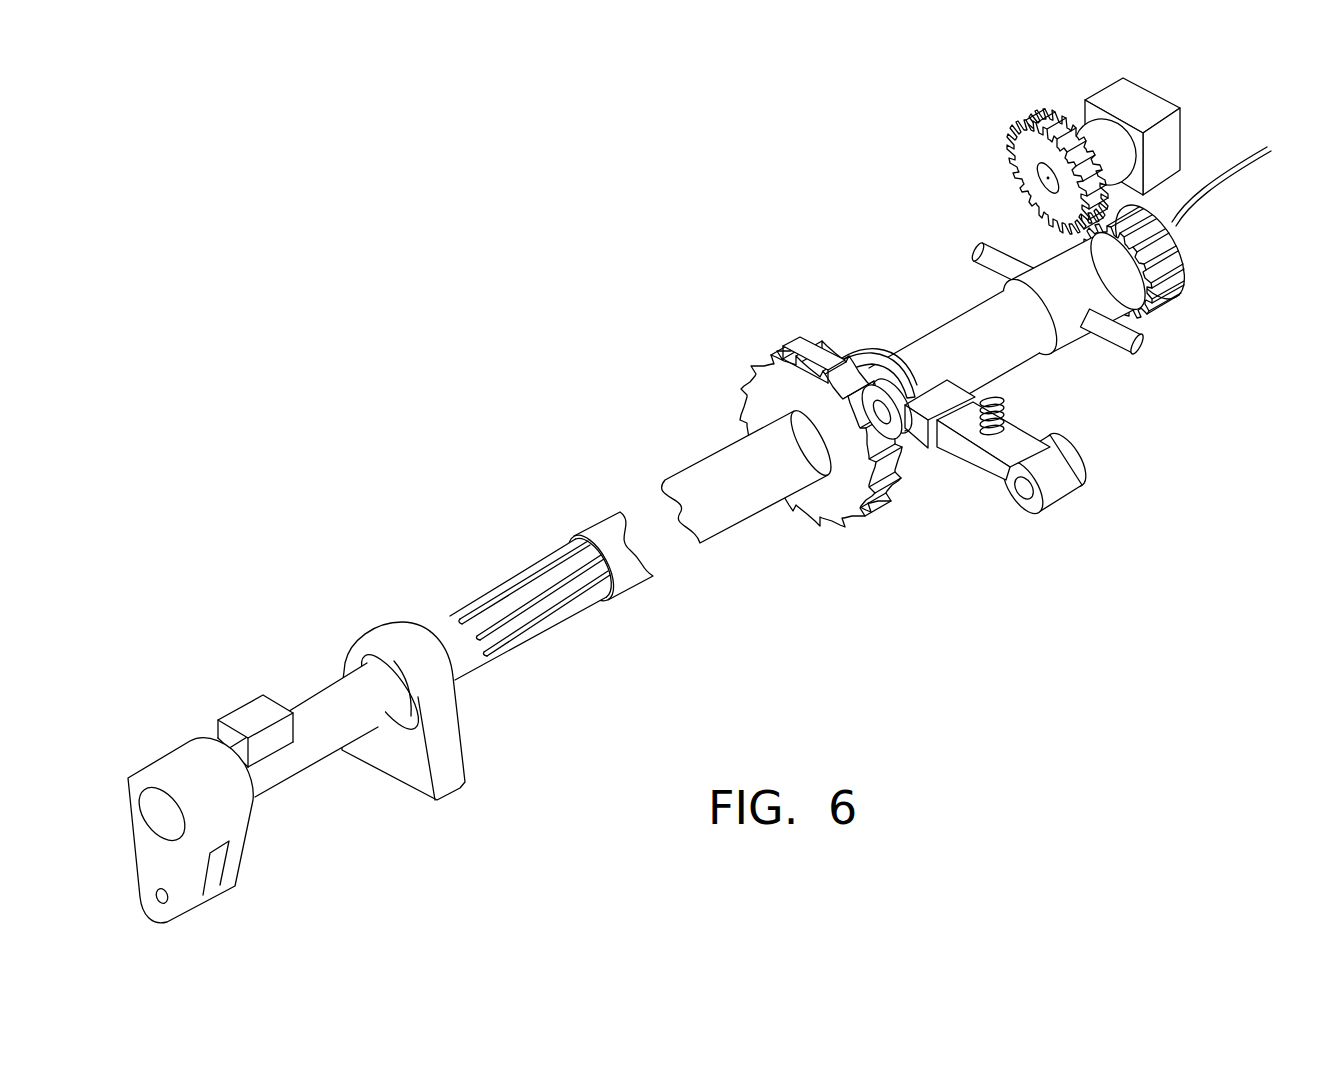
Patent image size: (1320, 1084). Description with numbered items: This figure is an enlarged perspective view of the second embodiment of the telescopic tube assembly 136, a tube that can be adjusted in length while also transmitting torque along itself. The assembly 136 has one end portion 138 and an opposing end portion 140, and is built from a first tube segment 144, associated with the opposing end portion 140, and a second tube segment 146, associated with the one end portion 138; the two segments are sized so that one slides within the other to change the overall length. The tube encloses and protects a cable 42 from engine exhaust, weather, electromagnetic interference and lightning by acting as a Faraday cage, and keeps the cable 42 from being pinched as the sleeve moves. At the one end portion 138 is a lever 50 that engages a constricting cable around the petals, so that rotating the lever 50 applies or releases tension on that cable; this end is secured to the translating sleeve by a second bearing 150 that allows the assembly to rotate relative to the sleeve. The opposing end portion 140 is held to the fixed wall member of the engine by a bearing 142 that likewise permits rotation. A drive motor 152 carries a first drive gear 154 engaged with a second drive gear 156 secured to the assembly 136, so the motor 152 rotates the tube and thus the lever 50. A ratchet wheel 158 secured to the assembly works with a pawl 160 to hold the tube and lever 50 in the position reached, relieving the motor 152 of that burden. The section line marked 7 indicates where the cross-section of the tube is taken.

The cable 42 is at (1223, 170).
The lever 50 is at (190, 770).
The telescopic tube assembly 136 is at (727, 463).
The one end portion 138 is at (364, 707).
The opposing end portion 140 is at (1094, 350).
The bearing 142 is at (1150, 304).
The first tube segment 144 is at (947, 320).
The second tube segment 146 is at (450, 627).
The second bearing 150 is at (420, 675).
The drive motor 152 is at (1110, 97).
The first drive gear 154 is at (1027, 123).
The second drive gear 156 is at (1162, 243).
The ratchet wheel 158 is at (783, 343).
The pawl 160 is at (1013, 443).
The section line 7 is at (503, 575).